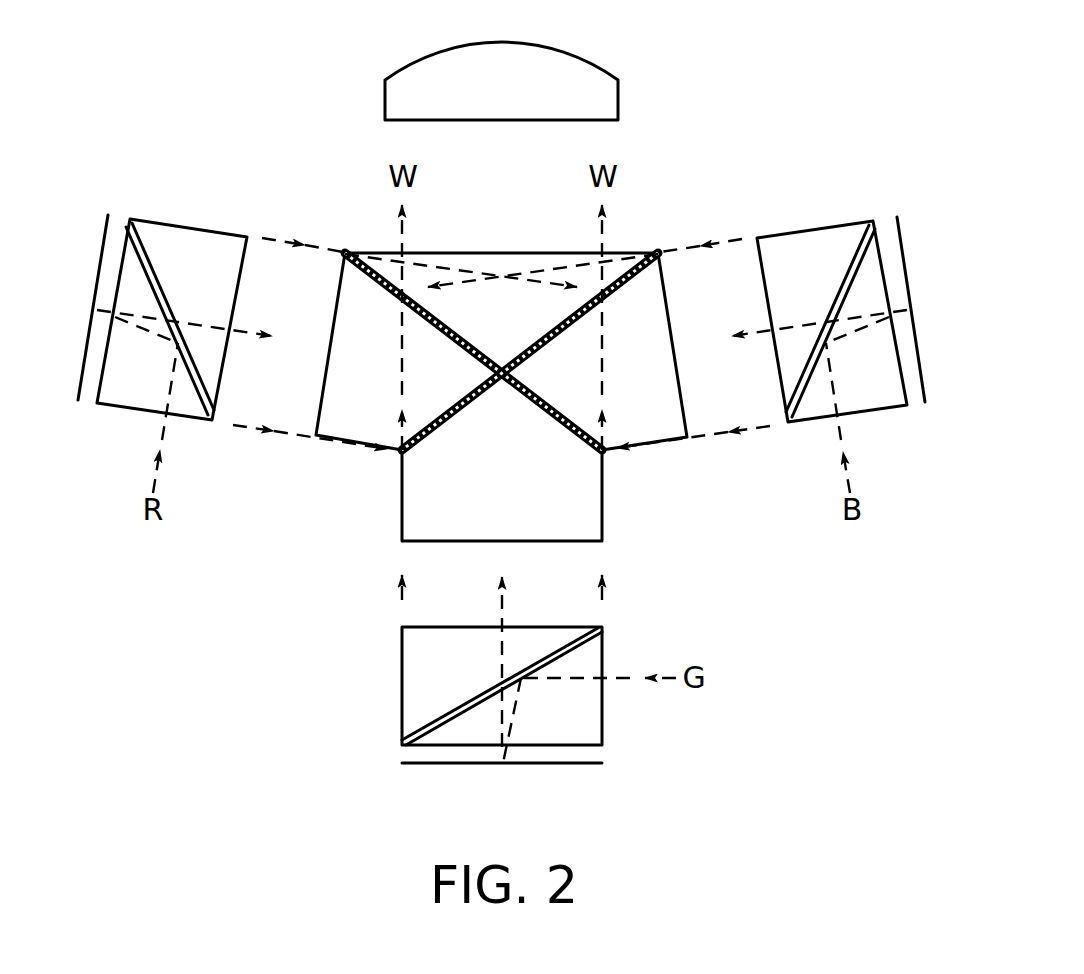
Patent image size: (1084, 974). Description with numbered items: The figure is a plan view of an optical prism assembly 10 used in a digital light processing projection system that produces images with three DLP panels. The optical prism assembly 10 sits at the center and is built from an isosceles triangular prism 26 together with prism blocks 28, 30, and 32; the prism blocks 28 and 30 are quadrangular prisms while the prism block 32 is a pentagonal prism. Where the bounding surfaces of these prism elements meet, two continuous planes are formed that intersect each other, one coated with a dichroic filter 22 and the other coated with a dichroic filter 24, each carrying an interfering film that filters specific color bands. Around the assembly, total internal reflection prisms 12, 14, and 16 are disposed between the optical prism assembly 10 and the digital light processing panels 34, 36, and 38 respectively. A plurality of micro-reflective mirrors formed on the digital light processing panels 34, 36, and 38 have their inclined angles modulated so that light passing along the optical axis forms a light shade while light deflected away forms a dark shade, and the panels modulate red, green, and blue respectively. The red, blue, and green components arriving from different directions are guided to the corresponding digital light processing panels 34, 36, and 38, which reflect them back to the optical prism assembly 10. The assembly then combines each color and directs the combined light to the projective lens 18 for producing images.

The optical prism assembly 10 is at (500, 390).
The total internal reflection prism 12 is at (182, 218).
The total internal reflection prism 14 is at (388, 680).
The total internal reflection prism 16 is at (824, 219).
The projective lens 18 is at (532, 43).
The dichroic filter 22 is at (447, 322).
The dichroic filter 24 is at (564, 332).
The isosceles triangular prism 26 is at (511, 262).
The prism block 28 is at (337, 391).
The prism block 30 is at (667, 390).
The prism block 32 is at (543, 541).
The digital light processing panel 34 is at (100, 266).
The digital light processing panel 36 is at (548, 767).
The digital light processing panel 38 is at (907, 273).